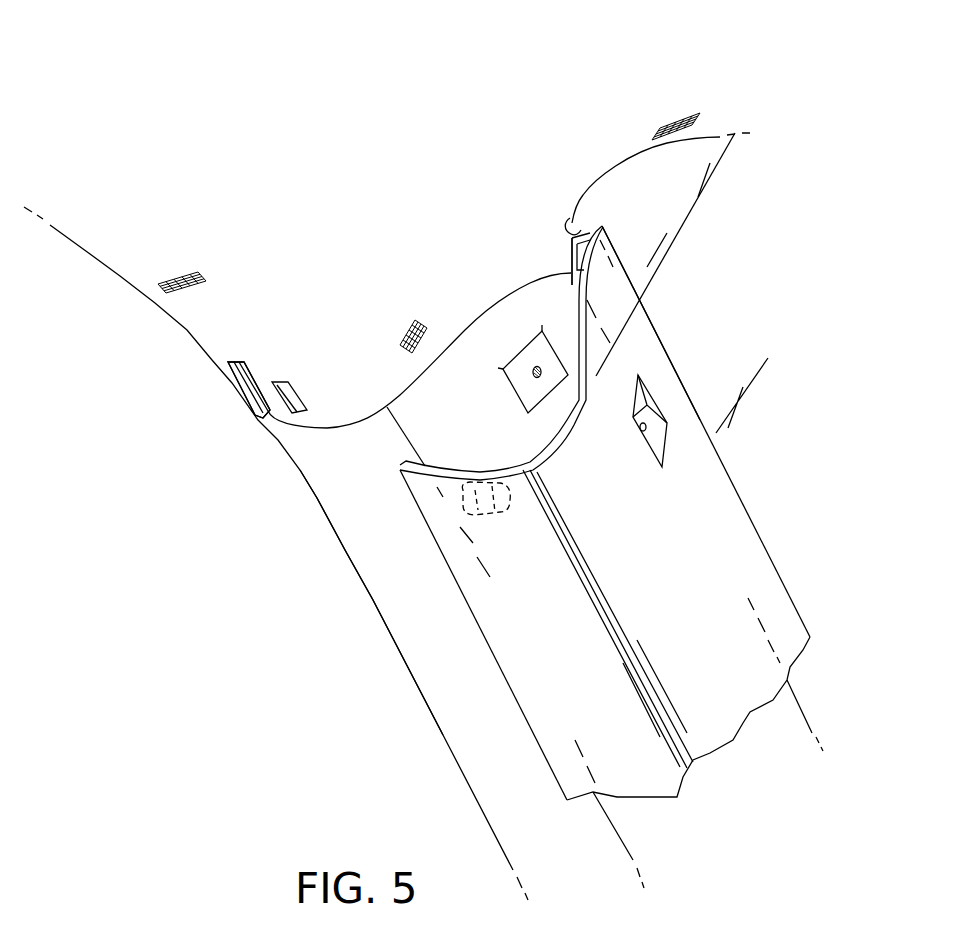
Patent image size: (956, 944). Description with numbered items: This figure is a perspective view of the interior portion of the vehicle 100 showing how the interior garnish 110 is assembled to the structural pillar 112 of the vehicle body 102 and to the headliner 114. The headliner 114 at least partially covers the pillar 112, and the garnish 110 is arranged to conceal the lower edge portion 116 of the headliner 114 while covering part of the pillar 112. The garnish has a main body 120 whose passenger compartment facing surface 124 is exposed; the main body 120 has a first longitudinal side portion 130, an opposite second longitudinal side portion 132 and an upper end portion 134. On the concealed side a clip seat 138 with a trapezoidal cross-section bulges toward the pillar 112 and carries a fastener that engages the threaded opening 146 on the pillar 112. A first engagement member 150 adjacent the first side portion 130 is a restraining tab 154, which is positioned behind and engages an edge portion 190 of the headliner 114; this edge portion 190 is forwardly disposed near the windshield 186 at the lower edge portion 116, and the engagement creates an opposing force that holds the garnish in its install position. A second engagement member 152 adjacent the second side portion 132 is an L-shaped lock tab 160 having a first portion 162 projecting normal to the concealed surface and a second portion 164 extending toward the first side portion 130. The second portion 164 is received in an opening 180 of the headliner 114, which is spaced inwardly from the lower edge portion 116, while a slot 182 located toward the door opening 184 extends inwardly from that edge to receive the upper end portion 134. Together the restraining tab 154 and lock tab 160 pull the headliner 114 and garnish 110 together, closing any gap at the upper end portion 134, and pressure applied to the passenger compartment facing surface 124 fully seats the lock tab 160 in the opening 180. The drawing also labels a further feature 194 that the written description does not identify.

The vehicle 100 is at (556, 88).
The vehicle body 102 is at (478, 813).
The interior garnish 110 is at (749, 482).
The structural pillar 112 is at (433, 700).
The headliner 114 is at (207, 312).
The lower edge portion 116 is at (435, 358).
The main body 120 is at (722, 532).
The passenger compartment facing surface 124 is at (720, 570).
The first longitudinal side portion 130 is at (687, 395).
The second longitudinal side portion 132 is at (534, 722).
The upper end portion 134 is at (593, 377).
The clip seat 138 is at (643, 403).
The threaded opening 146 is at (540, 378).
The first engagement member 150 is at (573, 257).
The second engagement member 152 is at (487, 523).
The restraining tab 154 is at (570, 247).
The lock tab 160 is at (501, 514).
The first portion 162 is at (463, 507).
The second portion 164 is at (490, 483).
The opening 180 is at (296, 392).
The slot 182 is at (248, 396).
The door opening 184 is at (326, 697).
The windshield 186 is at (740, 258).
The edge portion 190 is at (653, 203).
The tab strip 194 is at (235, 380).